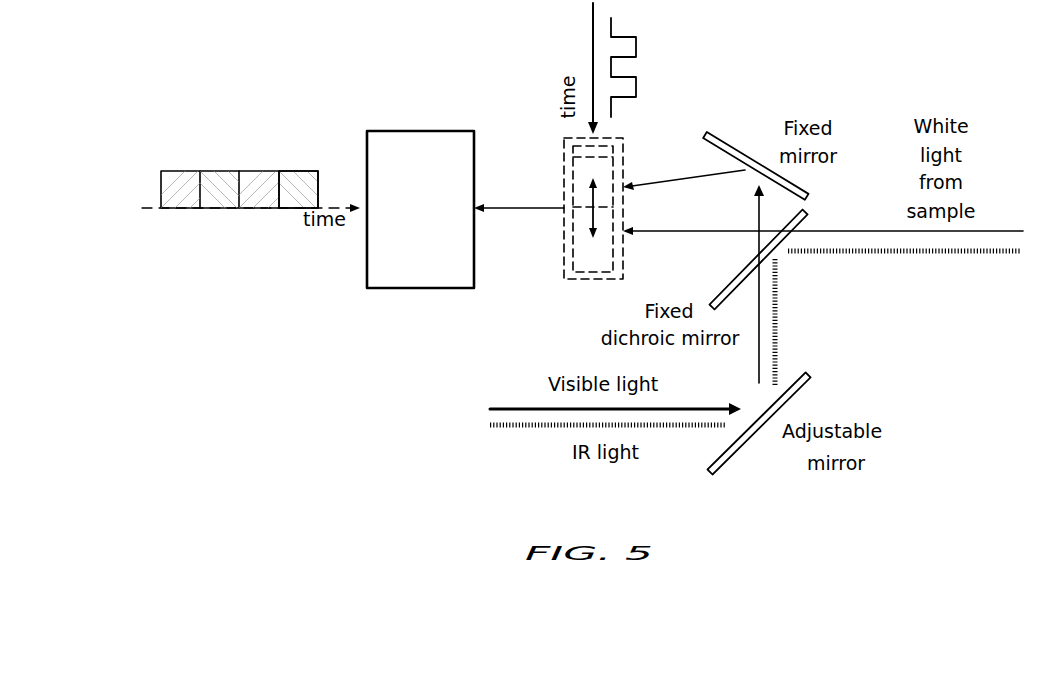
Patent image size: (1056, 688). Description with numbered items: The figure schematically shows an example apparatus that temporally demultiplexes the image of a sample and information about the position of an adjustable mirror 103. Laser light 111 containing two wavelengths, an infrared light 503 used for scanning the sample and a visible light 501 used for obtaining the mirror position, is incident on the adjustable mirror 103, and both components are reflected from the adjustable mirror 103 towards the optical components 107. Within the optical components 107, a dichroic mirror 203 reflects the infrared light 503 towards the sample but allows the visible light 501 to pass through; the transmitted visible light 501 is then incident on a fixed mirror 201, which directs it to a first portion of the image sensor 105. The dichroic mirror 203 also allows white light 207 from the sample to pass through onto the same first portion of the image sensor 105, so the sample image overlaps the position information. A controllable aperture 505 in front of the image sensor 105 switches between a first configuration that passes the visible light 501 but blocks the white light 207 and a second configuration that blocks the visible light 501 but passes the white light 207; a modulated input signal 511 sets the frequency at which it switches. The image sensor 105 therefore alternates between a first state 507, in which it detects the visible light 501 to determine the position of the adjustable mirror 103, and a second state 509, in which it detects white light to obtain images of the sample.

The adjustable mirror 103 is at (732, 461).
The image sensor 105 is at (447, 131).
The optical components 107 is at (801, 188).
The laser light 111 is at (488, 416).
The fixed mirror 201 is at (733, 140).
The dichroic mirror 203 is at (725, 290).
The white light 207 is at (1012, 231).
The visible light 501 is at (506, 407).
The infrared light 503 is at (508, 428).
The controllable aperture 505 is at (557, 137).
The first state 507 is at (161, 170).
The second state 509 is at (318, 170).
The modulated input signal 511 is at (637, 48).